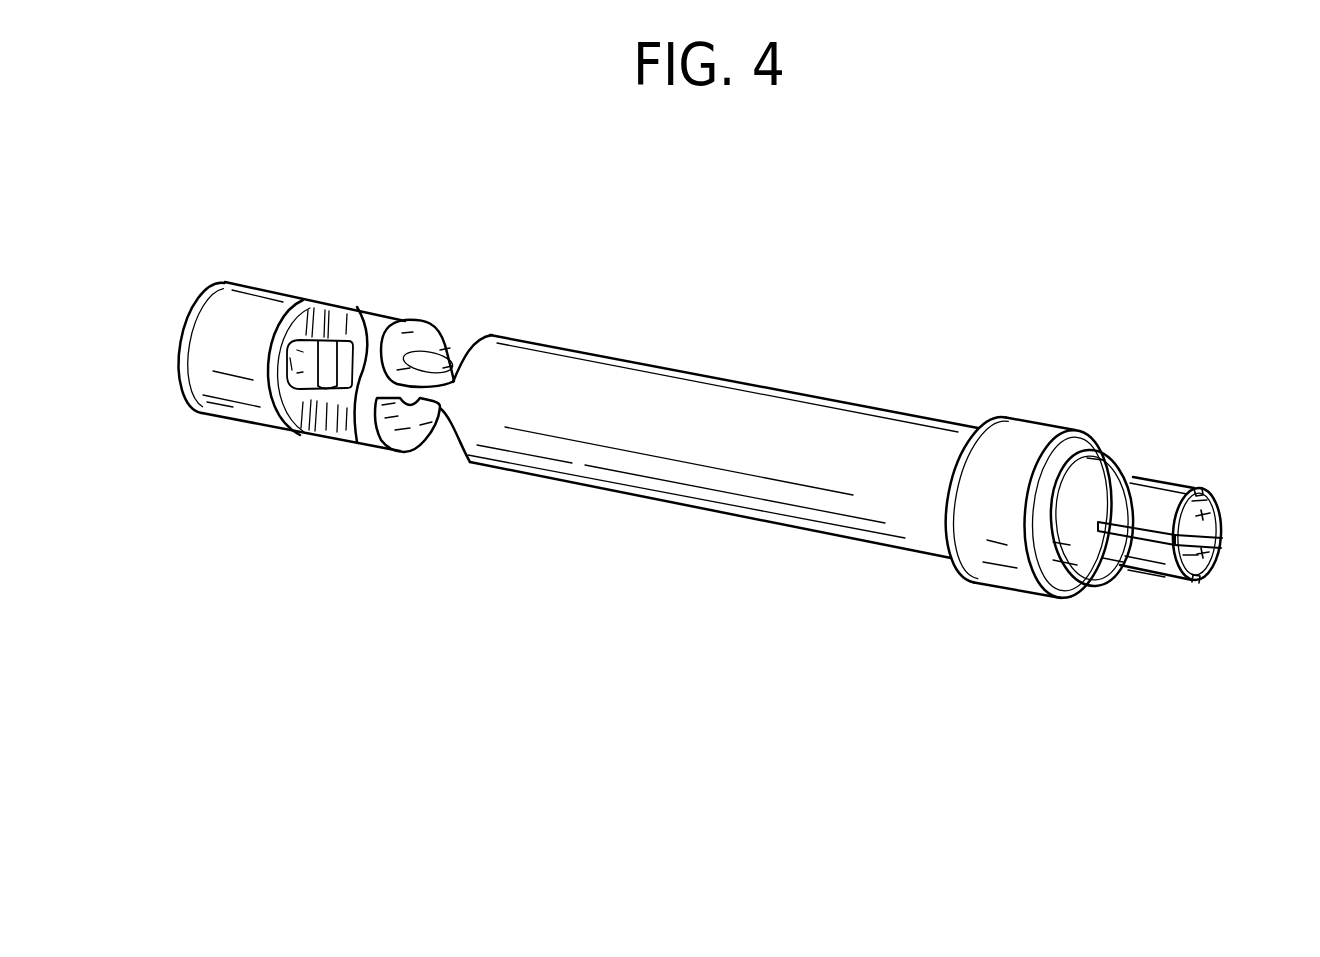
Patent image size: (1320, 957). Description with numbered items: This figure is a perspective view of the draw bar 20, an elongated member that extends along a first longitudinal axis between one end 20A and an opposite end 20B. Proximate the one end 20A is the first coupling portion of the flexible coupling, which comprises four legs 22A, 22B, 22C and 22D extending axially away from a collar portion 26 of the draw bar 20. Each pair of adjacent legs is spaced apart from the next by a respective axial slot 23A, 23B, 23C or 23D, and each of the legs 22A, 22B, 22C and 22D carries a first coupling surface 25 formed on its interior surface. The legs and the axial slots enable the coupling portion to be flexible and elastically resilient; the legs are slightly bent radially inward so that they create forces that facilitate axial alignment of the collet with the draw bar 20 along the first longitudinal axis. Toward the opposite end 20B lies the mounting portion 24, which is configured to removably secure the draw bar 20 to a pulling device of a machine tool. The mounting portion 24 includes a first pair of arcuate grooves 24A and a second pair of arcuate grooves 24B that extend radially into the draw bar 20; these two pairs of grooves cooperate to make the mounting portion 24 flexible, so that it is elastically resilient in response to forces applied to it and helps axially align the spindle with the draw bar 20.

The draw bar 20 is at (710, 382).
The one end of the draw bar 20A is at (1222, 503).
The opposite end of the draw bar 20B is at (197, 290).
The leg 22A is at (1142, 490).
The leg 22B is at (1213, 487).
The leg 22C is at (1208, 578).
The leg 22D is at (1152, 573).
The axial slot 23A is at (1193, 487).
The axial slot 23B is at (1220, 540).
The axial slot 23C is at (1197, 580).
The axial slot 23D is at (1150, 537).
The mounting portion 24 is at (517, 322).
The first pair of arcuate grooves 24A is at (307, 404).
The second pair of arcuate grooves 24B is at (465, 334).
The first coupling surface 25 is at (1222, 523).
The collar portion 26 is at (1062, 450).